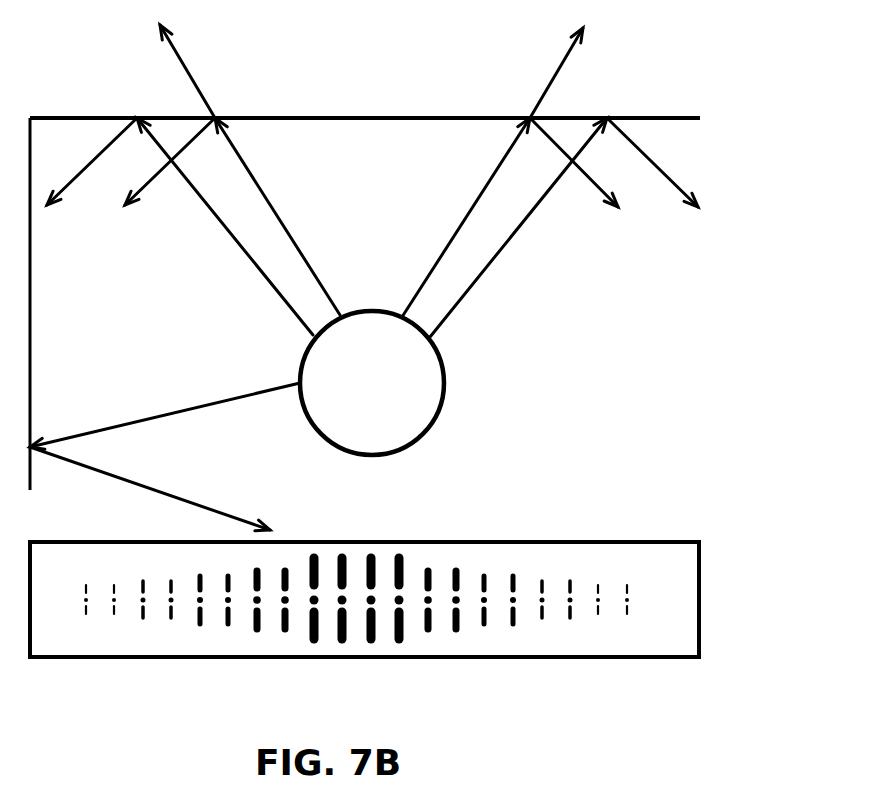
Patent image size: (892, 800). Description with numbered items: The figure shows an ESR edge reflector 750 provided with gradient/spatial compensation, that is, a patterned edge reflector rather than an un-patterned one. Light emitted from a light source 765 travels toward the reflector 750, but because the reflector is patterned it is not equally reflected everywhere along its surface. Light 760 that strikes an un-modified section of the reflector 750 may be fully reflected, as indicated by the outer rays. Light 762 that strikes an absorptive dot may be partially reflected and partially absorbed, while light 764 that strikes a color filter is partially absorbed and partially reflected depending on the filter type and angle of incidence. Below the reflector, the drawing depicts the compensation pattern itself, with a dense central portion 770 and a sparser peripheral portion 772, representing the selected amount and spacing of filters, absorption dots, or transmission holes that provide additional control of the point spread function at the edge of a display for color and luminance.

The ESR edge reflector 750 is at (672, 118).
The light 760 is at (228, 243).
The light 762 is at (471, 201).
The light 764 is at (273, 200).
The light source 765 is at (372, 383).
The central illumination pattern 770 is at (398, 565).
The peripheral illumination pattern 772 is at (540, 565).